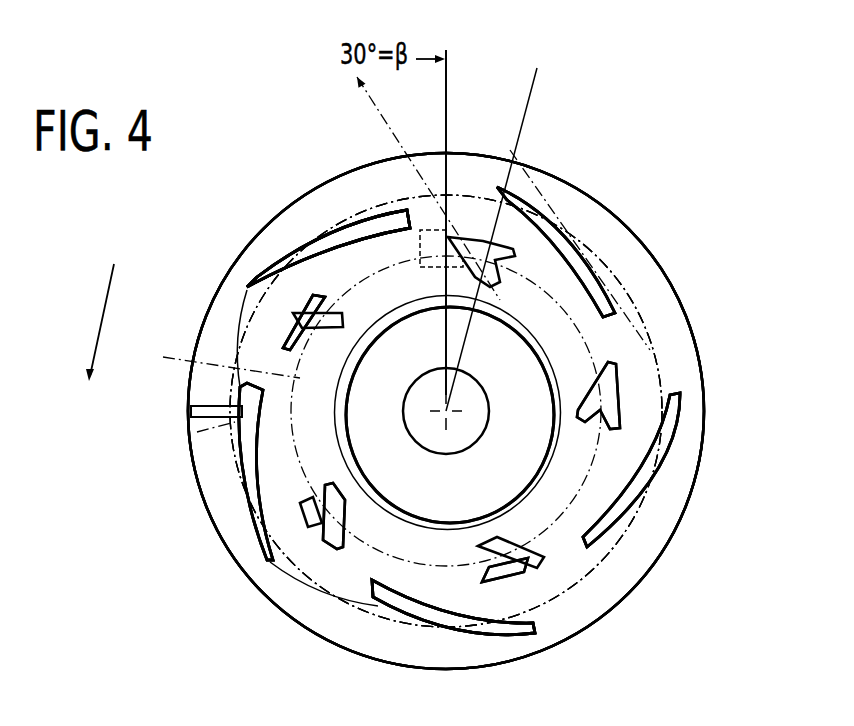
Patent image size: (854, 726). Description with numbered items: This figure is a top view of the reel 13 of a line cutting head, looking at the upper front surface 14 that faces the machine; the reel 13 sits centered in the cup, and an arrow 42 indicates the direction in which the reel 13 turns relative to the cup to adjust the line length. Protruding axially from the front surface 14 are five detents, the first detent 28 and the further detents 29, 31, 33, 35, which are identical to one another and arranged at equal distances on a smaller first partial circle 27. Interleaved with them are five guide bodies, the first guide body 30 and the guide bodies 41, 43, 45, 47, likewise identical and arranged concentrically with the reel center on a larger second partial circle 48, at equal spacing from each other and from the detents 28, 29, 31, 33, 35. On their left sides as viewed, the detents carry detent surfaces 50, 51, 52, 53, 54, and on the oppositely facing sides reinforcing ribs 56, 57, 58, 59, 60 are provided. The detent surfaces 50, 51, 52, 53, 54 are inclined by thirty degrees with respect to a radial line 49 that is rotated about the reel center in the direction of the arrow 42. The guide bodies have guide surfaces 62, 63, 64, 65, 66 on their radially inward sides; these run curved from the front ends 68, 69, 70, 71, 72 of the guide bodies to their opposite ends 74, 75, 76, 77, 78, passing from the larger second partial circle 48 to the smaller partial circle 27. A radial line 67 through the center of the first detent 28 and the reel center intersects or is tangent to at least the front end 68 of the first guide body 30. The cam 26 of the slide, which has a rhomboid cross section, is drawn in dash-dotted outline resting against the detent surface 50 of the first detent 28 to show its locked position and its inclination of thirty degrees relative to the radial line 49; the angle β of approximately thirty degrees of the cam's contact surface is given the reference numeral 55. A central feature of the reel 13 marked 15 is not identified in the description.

The reel 13 is at (178, 549).
The upper front surface 14 is at (683, 473).
The hub 15 is at (407, 512).
The cam 26 is at (400, 212).
The first partial circle 27 is at (200, 362).
The first detent 28 is at (448, 186).
The detent 29 is at (637, 363).
The first guide body 30 is at (607, 255).
The detent 31 is at (597, 608).
The detent 33 is at (337, 548).
The detent 35 is at (293, 327).
The guide body 41 is at (653, 495).
The arrow 42 is at (101, 296).
The guide body 43 is at (422, 632).
The guide body 45 is at (226, 487).
The guide body 47 is at (303, 229).
The second partial circle 48 is at (197, 432).
The radial line 49 is at (452, 82).
The detent surface 50 is at (455, 287).
The detent surface 51 is at (577, 386).
The detent surface 52 is at (520, 530).
The detent surface 53 is at (377, 491).
The detent surface 54 is at (323, 347).
The angle β 55 is at (442, 58).
The reinforcing rib 56 is at (562, 245).
The reinforcing rib 57 is at (620, 405).
The reinforcing rib 58 is at (508, 588).
The reinforcing rib 59 is at (307, 528).
The reinforcing rib 60 is at (305, 298).
The guide surface 62 is at (566, 256).
The guide surface 63 is at (650, 533).
The guide surface 64 is at (450, 612).
The guide surface 65 is at (265, 500).
The guide surface 66 is at (353, 217).
The radial line 67 is at (540, 78).
The front end 68 is at (497, 186).
The front end 69 is at (680, 396).
The front end 70 is at (535, 630).
The front end 71 is at (273, 560).
The front end 72 is at (262, 292).
The end 74 is at (628, 302).
The end 75 is at (637, 587).
The end 76 is at (372, 590).
The end 77 is at (191, 405).
The end 78 is at (407, 214).